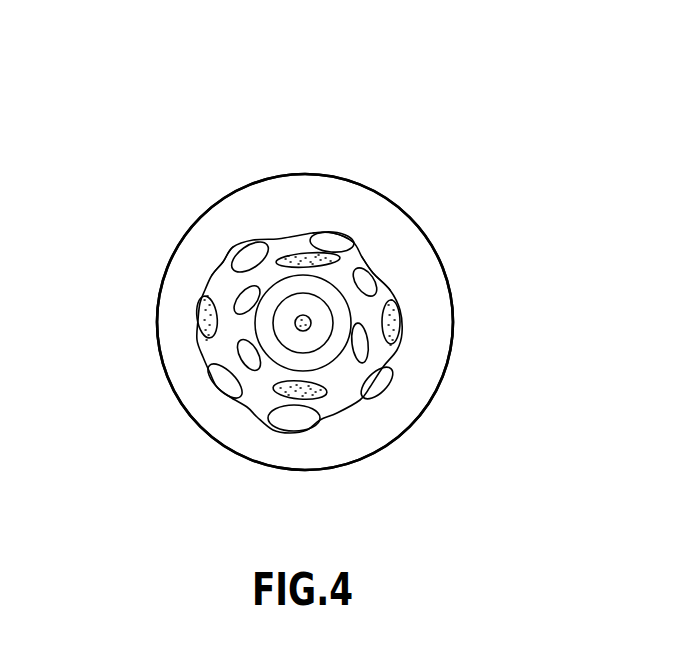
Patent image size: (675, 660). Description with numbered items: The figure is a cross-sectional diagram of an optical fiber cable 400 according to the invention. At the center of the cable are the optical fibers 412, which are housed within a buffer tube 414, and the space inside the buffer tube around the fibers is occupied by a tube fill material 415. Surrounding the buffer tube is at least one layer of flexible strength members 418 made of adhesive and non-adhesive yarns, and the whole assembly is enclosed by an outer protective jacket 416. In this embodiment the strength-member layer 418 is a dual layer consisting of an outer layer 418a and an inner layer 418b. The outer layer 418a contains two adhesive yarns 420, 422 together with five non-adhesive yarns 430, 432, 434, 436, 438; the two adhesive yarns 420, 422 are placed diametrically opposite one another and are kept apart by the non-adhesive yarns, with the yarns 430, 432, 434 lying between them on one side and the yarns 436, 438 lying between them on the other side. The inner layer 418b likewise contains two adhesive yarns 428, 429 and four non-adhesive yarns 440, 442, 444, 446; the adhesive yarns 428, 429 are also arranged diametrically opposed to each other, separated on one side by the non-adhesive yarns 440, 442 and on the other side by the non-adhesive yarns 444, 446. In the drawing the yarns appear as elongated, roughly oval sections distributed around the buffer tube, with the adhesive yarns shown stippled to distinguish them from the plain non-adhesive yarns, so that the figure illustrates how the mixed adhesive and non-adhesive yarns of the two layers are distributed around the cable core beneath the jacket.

The optical fiber cable 400 is at (350, 78).
The optical fibers 412 is at (297, 330).
The buffer tube 414 is at (330, 293).
The tube fill material 415 is at (402, 437).
The outer protective jacket 416 is at (313, 450).
The layer of flexible strength members 418 is at (193, 373).
The outer layer 418a is at (347, 218).
The inner layer 418b is at (233, 292).
The adhesive yarn 420 is at (395, 314).
The adhesive yarn 422 is at (200, 320).
The adhesive yarn 428 is at (309, 342).
The adhesive yarn 429 is at (300, 257).
The non-adhesive yarn 430 is at (372, 392).
The non-adhesive yarn 432 is at (280, 420).
The non-adhesive yarn 434 is at (221, 384).
The non-adhesive yarn 436 is at (258, 246).
The non-adhesive yarn 438 is at (333, 241).
The non-adhesive yarn 440 is at (365, 282).
The non-adhesive yarn 442 is at (362, 358).
The non-adhesive yarn 444 is at (253, 360).
The non-adhesive yarn 446 is at (240, 310).